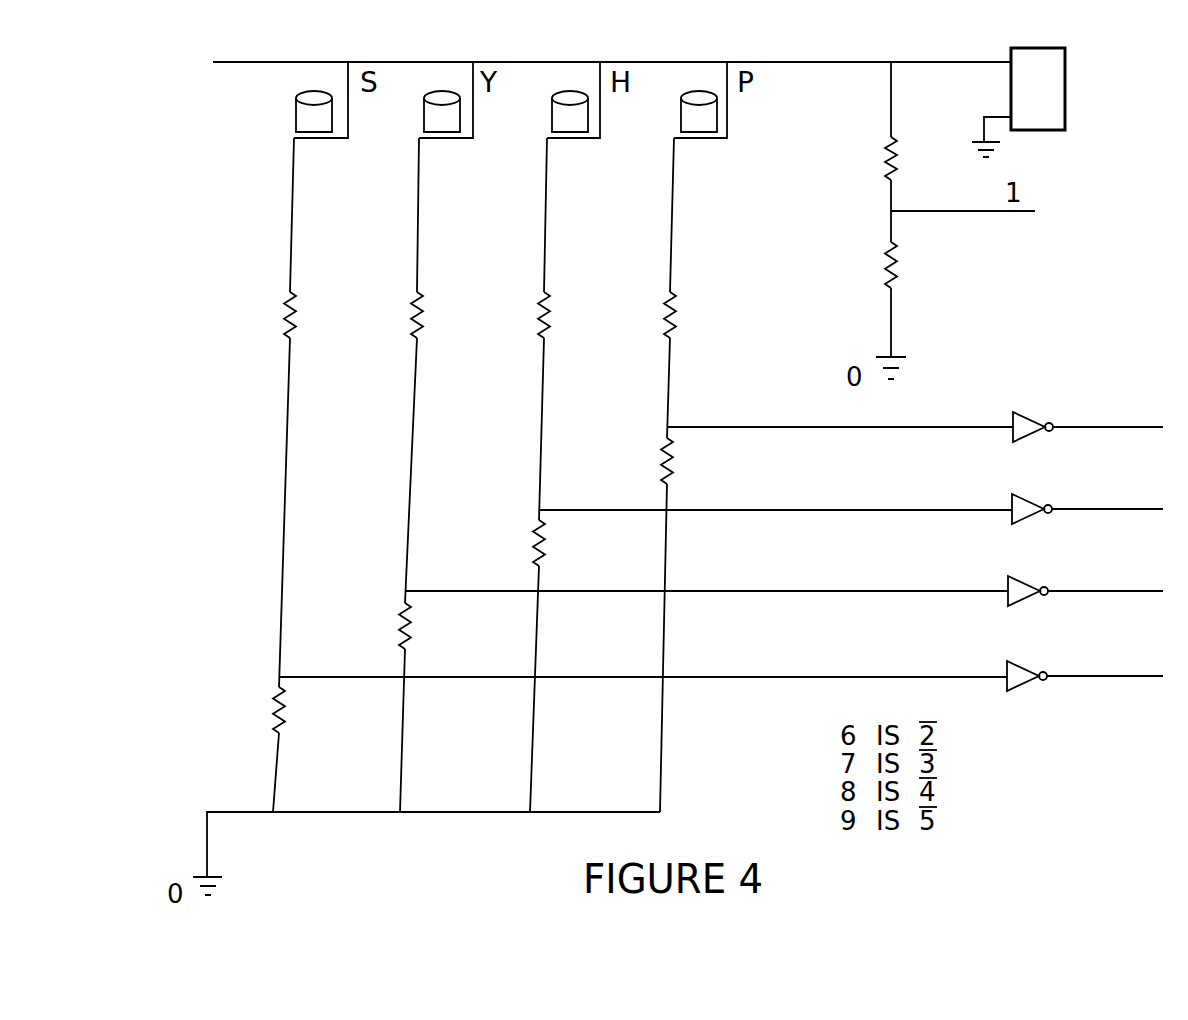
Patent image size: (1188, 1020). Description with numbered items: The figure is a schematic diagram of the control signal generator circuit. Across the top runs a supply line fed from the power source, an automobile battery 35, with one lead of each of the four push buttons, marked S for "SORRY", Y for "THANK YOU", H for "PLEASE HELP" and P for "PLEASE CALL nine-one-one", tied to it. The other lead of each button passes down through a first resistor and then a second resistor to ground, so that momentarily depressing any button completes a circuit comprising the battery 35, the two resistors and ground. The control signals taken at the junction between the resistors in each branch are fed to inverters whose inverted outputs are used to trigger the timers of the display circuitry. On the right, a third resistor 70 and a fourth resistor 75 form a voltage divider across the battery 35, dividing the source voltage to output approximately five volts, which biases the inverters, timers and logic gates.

The automobile battery 35 is at (1067, 109).
The R3 70 is at (894, 158).
The R4 75 is at (892, 268).